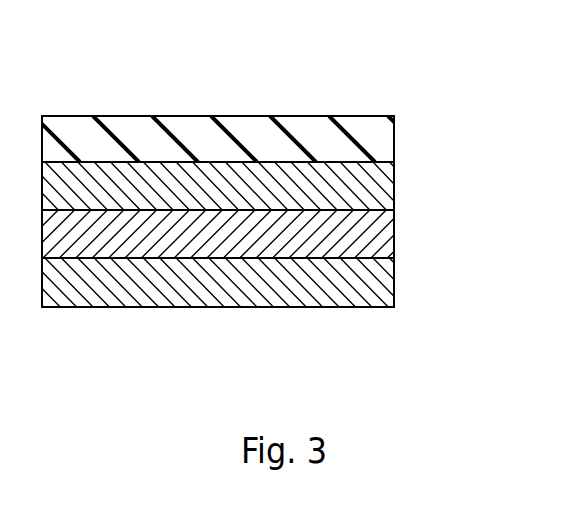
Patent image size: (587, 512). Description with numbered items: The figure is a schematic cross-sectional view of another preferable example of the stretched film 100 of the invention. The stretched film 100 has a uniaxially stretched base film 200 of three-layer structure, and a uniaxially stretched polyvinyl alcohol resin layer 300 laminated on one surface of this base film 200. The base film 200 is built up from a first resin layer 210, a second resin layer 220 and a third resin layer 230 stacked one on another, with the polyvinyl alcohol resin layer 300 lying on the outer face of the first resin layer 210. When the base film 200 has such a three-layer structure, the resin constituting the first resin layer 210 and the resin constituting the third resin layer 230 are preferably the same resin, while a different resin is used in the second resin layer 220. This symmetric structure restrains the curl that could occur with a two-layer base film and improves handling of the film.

The stretched film 100 is at (402, 63).
The base film 200 is at (498, 178).
The first resin layer 210 is at (388, 186).
The second resin layer 220 is at (388, 235).
The third resin layer 230 is at (388, 282).
The polyvinyl alcohol resin layer 300 is at (388, 137).